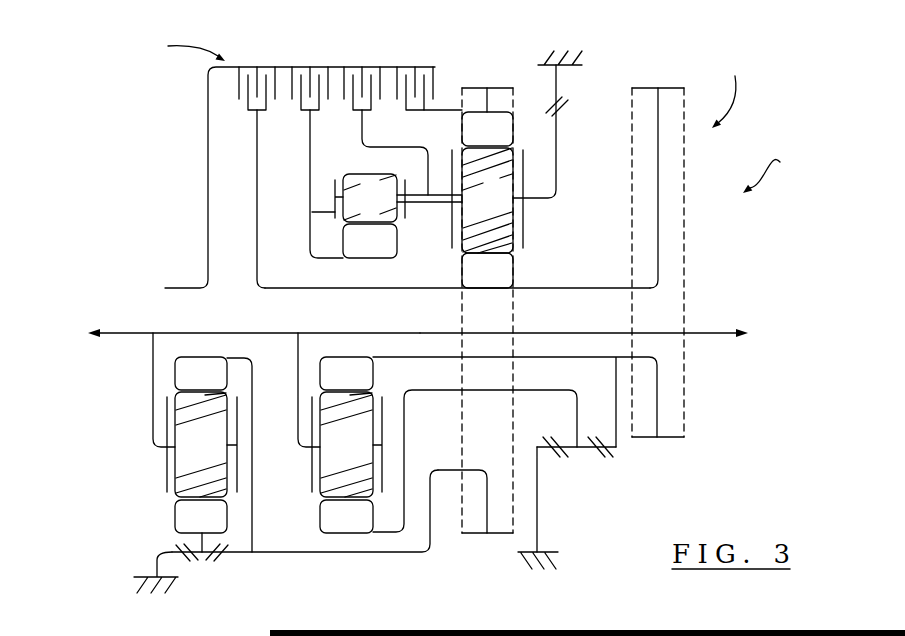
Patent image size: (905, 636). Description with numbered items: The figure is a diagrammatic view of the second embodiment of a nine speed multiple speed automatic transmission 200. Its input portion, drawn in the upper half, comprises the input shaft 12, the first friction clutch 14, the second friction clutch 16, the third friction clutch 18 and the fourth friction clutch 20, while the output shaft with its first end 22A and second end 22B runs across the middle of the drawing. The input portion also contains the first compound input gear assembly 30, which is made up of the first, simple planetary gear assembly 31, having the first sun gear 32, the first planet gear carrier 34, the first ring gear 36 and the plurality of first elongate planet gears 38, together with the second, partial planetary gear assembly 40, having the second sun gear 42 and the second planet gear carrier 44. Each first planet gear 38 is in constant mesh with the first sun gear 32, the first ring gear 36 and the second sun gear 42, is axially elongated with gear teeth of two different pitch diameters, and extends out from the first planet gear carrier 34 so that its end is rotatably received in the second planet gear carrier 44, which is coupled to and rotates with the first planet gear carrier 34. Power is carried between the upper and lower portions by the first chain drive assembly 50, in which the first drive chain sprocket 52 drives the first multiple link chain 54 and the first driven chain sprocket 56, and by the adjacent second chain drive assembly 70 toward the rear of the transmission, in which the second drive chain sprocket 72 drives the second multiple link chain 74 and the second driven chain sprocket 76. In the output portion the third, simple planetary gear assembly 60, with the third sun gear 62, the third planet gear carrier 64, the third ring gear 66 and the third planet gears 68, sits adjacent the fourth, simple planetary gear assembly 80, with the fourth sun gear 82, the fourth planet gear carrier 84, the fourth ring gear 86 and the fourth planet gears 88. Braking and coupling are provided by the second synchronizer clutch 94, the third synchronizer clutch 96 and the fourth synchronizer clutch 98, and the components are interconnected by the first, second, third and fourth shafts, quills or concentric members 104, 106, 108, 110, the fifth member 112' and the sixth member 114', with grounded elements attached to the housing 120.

The input shaft 12 is at (206, 222).
The first friction clutch 14 is at (243, 97).
The second friction clutch 16 is at (298, 92).
The third friction clutch 18 is at (354, 92).
The fourth friction clutch 20 is at (405, 106).
The first end of the output shaft 22A is at (136, 334).
The second end of the output shaft 22B is at (713, 332).
The first compound input gear assembly 30 is at (181, 48).
The first simple planetary gear assembly 31 is at (468, 301).
The first sun gear 32 is at (475, 282).
The first planet gear carrier 34 is at (523, 218).
The first ring gear 36 is at (475, 141).
The first elongate planet gears 38 is at (358, 210).
The second partial planetary gear assembly 40 is at (356, 278).
The second sun gear 42 is at (358, 254).
The second planet gear carrier 44 is at (313, 212).
The first chain drive assembly 50 is at (518, 58).
The first drive chain sprocket 52 is at (491, 84).
The first multiple link chain 54 is at (516, 325).
The first driven chain sprocket 56 is at (498, 537).
The third simple planetary gear assembly 60 is at (156, 543).
The third sun gear 62 is at (190, 385).
The third planet gear carrier 64 is at (238, 472).
The third ring gear 66 is at (190, 529).
The third planet gears 68 is at (191, 457).
The second chain drive assembly 70 is at (730, 89).
The second drive chain sprocket 72 is at (672, 85).
The second multiple link chain 74 is at (686, 263).
The second driven chain sprocket 76 is at (672, 438).
The fourth simple planetary gear assembly 80 is at (347, 551).
The fourth sun gear 82 is at (335, 385).
The fourth planet gear carrier 84 is at (383, 437).
The fourth ring gear 86 is at (335, 529).
The fourth planet gears 88 is at (335, 457).
The second synchronizer clutch (brake) 94 is at (185, 563).
The third synchronizer clutch (brake) 96 is at (555, 455).
The fourth synchronizer clutch 98 is at (222, 558).
The first shaft, quill or concentric member 104 is at (255, 168).
The second shaft, quill or concentric member 106 is at (308, 130).
The third shaft, quill or concentric member 108 is at (359, 128).
The fourth shaft, quill or concentric member 110 is at (447, 108).
The fifth shaft, quill or concentric member 112' is at (307, 527).
The sixth shaft, quill or concentric member 114' is at (515, 402).
The housing 120 is at (575, 60).
The multiple speed automatic transmission 200 is at (778, 165).